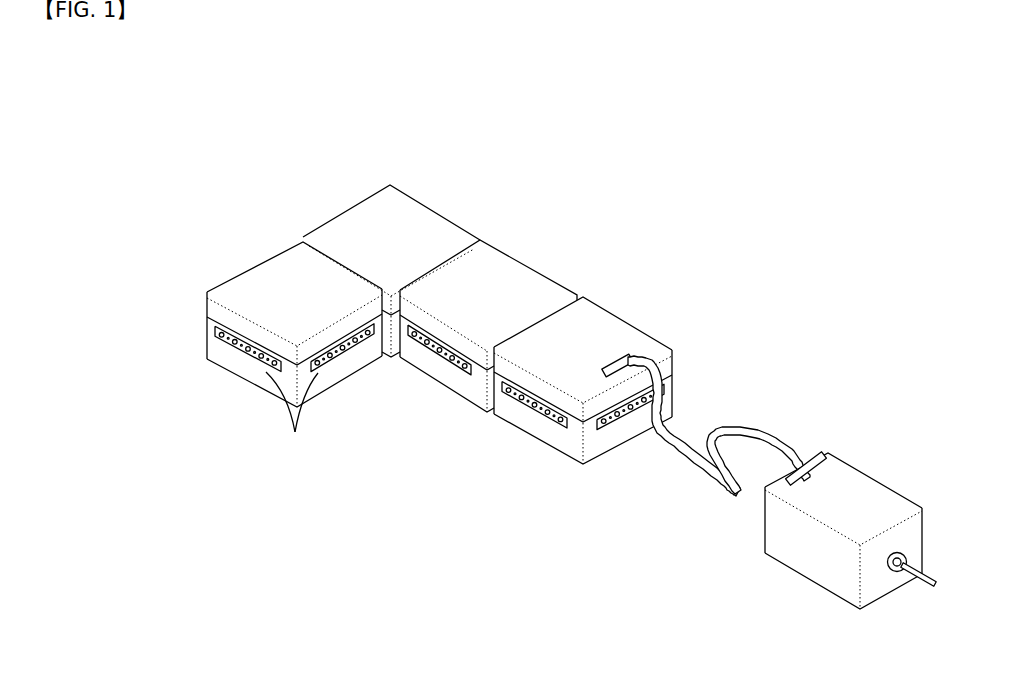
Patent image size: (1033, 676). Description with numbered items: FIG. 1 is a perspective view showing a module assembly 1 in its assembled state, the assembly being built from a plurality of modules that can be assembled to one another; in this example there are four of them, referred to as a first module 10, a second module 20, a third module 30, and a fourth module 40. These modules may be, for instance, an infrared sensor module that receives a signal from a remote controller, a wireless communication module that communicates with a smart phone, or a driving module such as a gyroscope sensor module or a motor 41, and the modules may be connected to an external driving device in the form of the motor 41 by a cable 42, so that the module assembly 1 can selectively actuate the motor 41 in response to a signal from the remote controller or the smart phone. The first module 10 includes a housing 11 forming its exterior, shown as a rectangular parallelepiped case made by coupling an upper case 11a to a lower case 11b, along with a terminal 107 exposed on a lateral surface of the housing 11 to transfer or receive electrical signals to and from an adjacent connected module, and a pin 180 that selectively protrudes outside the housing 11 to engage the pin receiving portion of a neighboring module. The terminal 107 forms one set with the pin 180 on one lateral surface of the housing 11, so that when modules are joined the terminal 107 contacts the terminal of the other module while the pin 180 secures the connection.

The module assembly 1 is at (482, 120).
The first module 10 is at (251, 325).
The housing 11 is at (248, 324).
The upper case 11a is at (217, 304).
The lower case 11b is at (268, 360).
The terminal 107 is at (292, 413).
The pin 180 is at (223, 341).
The second module 20 is at (448, 196).
The third module 30 is at (540, 252).
The fourth module 40 is at (640, 308).
The motor 41 is at (881, 463).
The cable 42 is at (760, 428).